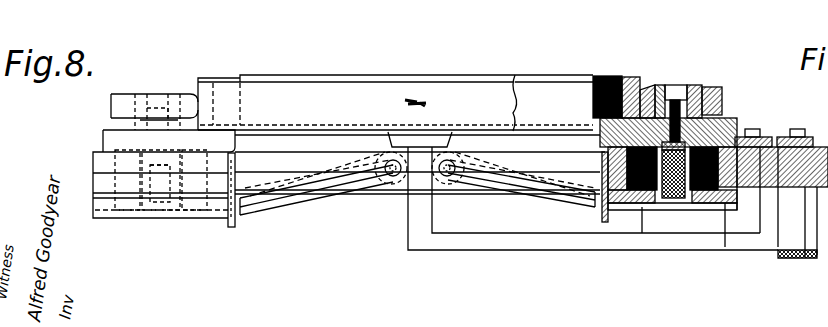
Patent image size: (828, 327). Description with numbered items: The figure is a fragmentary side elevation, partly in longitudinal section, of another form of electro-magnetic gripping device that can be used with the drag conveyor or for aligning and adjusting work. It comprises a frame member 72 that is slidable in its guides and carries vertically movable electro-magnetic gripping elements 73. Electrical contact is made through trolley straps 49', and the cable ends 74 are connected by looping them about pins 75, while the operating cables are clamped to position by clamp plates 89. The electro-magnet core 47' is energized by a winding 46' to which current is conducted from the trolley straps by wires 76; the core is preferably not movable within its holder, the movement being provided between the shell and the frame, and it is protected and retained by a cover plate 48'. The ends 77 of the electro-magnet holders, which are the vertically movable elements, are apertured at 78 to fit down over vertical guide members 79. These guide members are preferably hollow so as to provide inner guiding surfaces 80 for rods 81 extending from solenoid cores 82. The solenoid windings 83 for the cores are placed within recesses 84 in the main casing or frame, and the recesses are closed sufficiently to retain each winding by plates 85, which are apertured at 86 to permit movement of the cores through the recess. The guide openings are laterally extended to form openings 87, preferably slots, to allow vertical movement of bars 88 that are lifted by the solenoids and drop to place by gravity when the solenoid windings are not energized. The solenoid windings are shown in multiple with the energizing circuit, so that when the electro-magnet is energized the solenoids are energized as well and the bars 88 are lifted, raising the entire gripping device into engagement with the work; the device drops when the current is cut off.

The winding 46' is at (628, 82).
The electro-magnet core 47' is at (395, 83).
The cover plate 48' is at (607, 73).
The trolley straps 49' is at (782, 175).
The frame member 72 is at (196, 186).
The electro-magnetic gripping elements 73 is at (648, 85).
The cable ends 74 is at (284, 200).
The pins 75 is at (390, 185).
The wires 76 is at (445, 250).
The ends of the electro-magnet holders 77 is at (118, 100).
The apertures 78 is at (728, 118).
The vertical guide members 79 is at (141, 93).
The inner guiding surfaces 80 is at (150, 108).
The rods 81 is at (705, 125).
The solenoid cores 82 is at (157, 205).
The solenoid windings 83 is at (127, 205).
The recesses 84 is at (746, 136).
The plates 85 is at (708, 205).
The apertures 86 is at (663, 205).
The openings 87 is at (143, 132).
The bars 88 is at (600, 137).
The clamp plates 89 is at (239, 222).